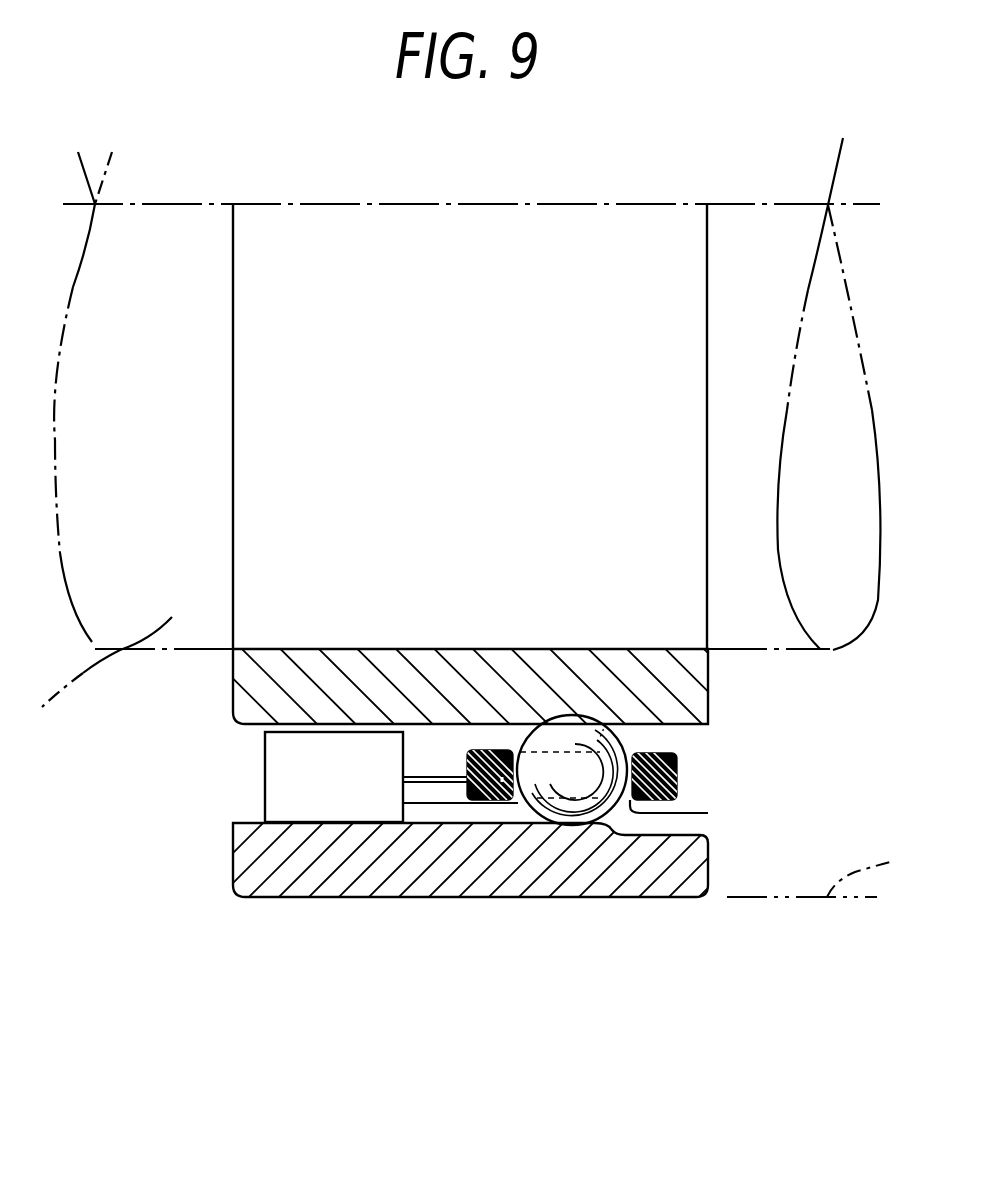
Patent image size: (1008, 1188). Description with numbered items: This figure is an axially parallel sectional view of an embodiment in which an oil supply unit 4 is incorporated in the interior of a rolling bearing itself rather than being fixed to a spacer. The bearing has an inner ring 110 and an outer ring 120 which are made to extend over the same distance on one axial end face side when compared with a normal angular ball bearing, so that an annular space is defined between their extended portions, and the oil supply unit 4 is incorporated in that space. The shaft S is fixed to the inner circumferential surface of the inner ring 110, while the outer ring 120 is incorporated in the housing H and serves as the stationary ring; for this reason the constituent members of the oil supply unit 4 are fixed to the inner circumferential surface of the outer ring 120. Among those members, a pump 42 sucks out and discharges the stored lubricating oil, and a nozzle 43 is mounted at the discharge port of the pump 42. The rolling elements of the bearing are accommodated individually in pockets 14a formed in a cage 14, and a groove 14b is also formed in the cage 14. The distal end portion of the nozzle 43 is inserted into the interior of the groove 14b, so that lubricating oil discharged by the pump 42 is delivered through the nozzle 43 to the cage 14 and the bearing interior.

The oil supply unit 4 is at (190, 807).
The cage 14 is at (677, 771).
The pocket 14a is at (640, 813).
The groove 14b is at (542, 790).
The pump 42 is at (337, 807).
The nozzle 43 is at (440, 785).
The inner ring 110 is at (428, 670).
The outer ring 120 is at (617, 887).
The shaft S is at (100, 447).
The housing H is at (864, 860).